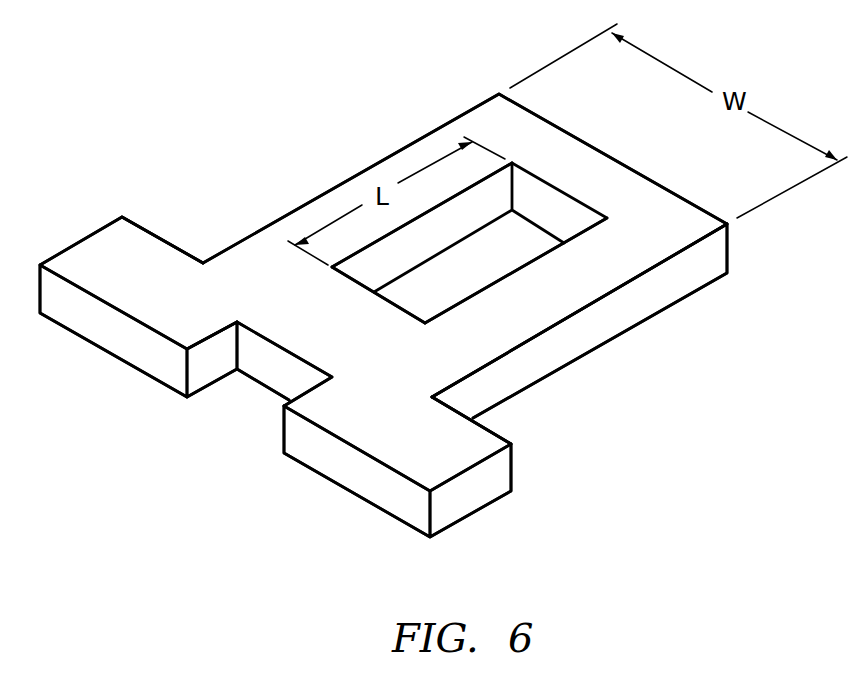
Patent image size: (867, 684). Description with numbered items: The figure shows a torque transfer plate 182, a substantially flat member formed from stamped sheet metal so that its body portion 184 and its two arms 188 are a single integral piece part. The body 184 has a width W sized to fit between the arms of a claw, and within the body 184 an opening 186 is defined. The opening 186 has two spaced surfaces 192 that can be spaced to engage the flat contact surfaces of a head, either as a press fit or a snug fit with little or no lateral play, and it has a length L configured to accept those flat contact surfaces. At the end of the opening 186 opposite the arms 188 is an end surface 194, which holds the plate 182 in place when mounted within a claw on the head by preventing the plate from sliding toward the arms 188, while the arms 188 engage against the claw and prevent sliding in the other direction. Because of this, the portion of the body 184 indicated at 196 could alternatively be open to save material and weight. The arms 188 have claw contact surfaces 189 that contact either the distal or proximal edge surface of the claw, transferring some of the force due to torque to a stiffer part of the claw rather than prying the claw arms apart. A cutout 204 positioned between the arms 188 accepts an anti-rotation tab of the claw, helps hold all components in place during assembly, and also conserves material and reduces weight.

The torque transfer plate 182 is at (628, 155).
The body portion 184 is at (620, 252).
The opening 186 is at (448, 270).
The arm 188 is at (78, 242).
The claw contact surface 189 is at (163, 240).
The spaced surfaces 192 is at (366, 249).
The end surface 194 is at (562, 187).
The portion of body 196 is at (390, 303).
The cutout 204 is at (248, 405).